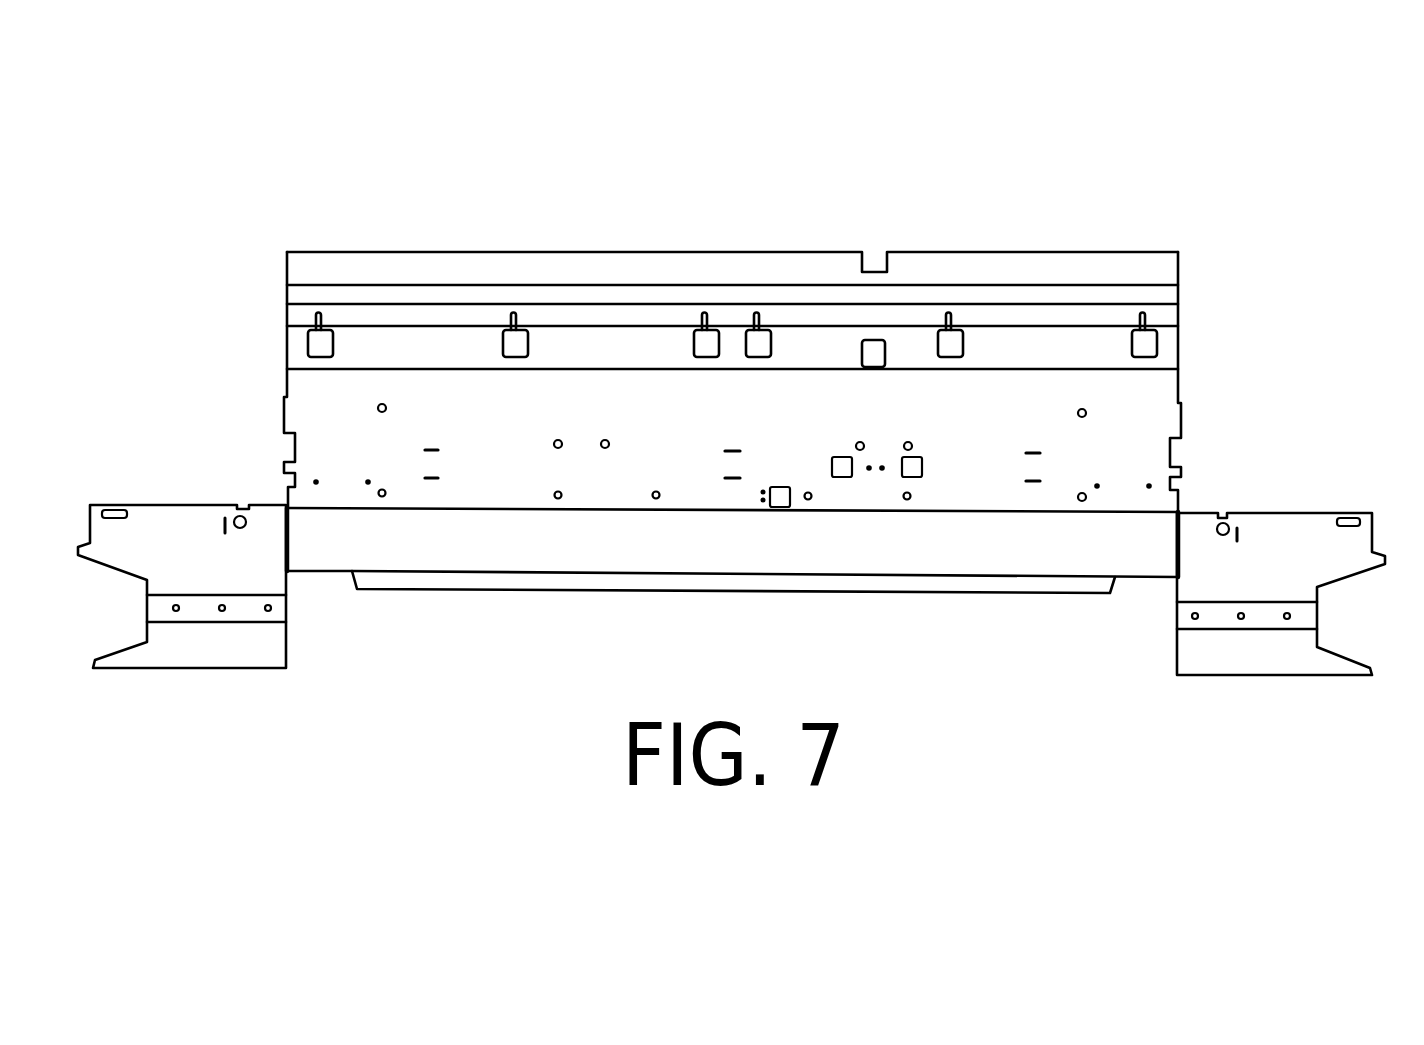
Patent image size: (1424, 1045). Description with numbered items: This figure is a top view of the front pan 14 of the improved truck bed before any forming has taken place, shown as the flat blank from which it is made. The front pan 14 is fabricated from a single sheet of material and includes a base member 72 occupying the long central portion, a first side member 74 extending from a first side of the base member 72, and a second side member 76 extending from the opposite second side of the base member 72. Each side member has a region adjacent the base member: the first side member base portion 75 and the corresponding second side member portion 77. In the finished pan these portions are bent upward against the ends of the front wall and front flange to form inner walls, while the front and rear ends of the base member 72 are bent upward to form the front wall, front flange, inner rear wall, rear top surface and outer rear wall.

The front pan 14 is at (849, 383).
The base member 72 is at (618, 270).
The first side member 74 is at (182, 581).
The first side member base portion 75 is at (177, 525).
The second side member 76 is at (1281, 609).
The second side member 77 is at (1268, 543).